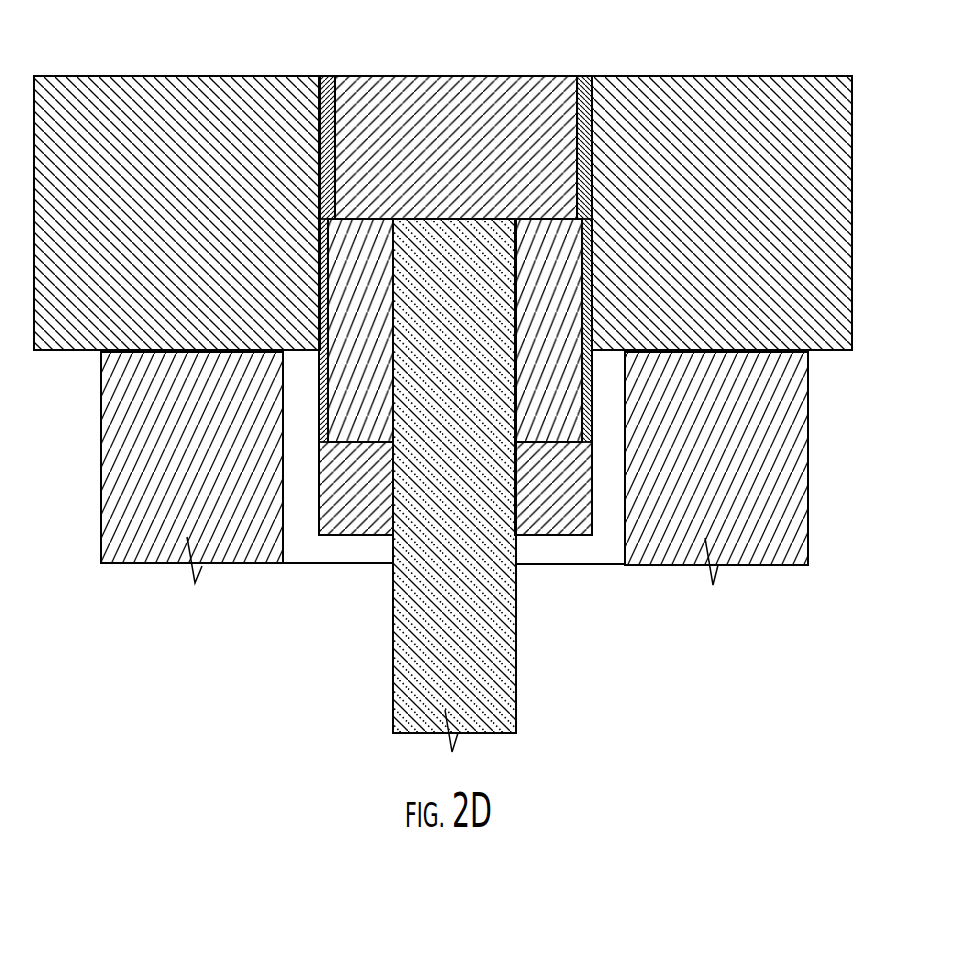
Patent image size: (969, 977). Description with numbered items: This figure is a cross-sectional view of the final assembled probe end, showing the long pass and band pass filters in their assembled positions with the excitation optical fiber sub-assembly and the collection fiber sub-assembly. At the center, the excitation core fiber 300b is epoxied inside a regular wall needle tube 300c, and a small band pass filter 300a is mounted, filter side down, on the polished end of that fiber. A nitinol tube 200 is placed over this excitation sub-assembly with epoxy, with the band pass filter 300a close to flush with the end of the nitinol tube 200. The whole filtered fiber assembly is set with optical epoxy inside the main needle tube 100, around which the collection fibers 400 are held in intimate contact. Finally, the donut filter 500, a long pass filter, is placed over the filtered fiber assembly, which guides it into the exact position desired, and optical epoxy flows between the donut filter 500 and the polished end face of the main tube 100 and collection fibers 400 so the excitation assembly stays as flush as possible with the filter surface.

The needle tube 100 is at (610, 538).
The nitinol tube 200 is at (325, 90).
The band pass filter 300a is at (383, 90).
The core fiber 300b is at (516, 637).
The needle tube 300c is at (368, 413).
The collection fibers 400 is at (122, 458).
The donut filter 500 is at (715, 100).